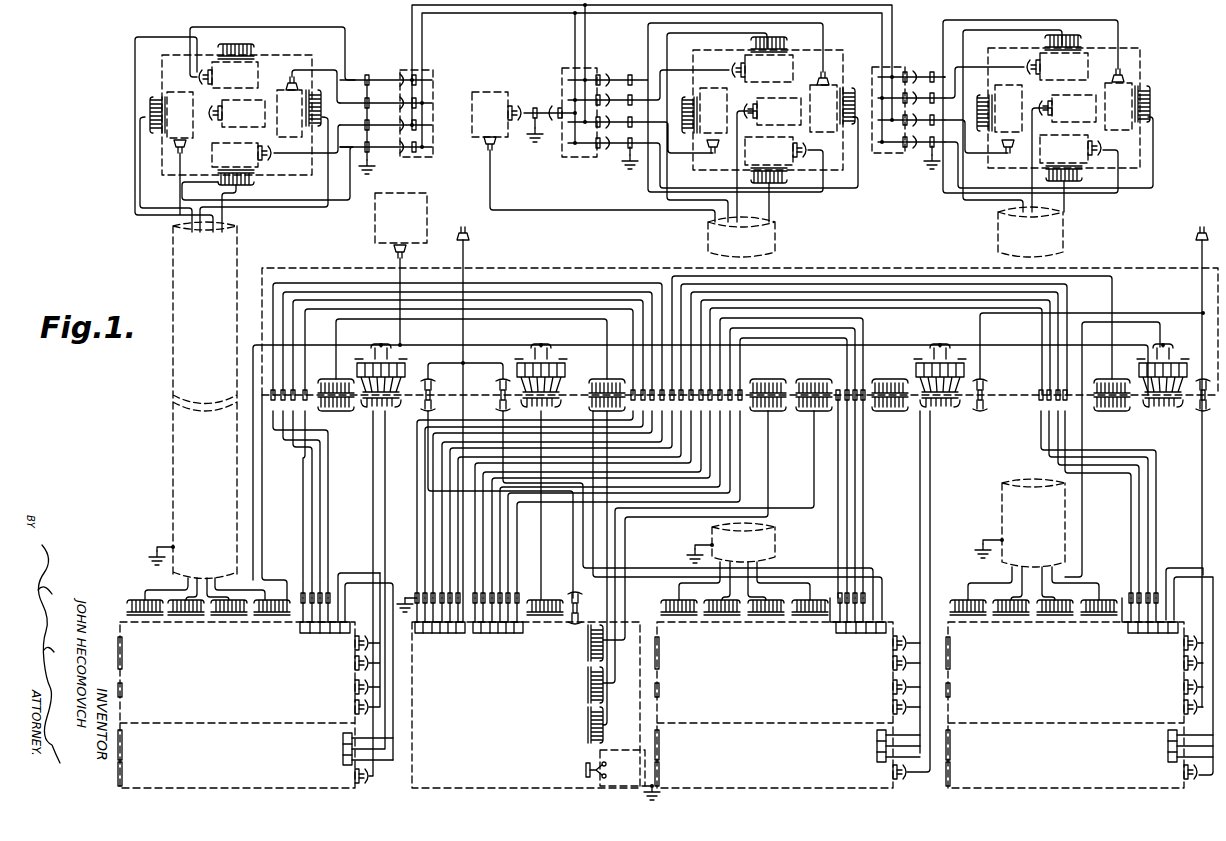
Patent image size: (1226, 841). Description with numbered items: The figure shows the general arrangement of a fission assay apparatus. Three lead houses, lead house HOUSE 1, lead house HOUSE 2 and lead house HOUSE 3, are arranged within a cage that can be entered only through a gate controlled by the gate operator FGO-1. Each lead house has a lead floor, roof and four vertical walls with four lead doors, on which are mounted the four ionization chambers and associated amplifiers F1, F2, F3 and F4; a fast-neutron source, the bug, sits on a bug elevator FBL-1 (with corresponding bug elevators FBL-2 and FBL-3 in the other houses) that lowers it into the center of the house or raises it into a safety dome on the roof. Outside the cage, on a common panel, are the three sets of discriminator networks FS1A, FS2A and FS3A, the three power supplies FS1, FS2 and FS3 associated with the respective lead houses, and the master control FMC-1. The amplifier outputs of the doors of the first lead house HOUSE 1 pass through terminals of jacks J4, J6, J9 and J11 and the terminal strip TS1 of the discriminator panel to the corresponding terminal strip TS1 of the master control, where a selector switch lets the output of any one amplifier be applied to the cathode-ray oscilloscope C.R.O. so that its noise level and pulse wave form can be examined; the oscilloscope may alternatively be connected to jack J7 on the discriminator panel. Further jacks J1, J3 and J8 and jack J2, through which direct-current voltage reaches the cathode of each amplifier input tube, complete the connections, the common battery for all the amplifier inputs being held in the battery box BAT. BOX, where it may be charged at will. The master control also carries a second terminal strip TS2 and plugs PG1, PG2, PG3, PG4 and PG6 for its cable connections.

The lead house HOUSE 1 is at (236, 393).
The lead house HOUSE 2 is at (745, 140).
The lead house HOUSE 3 is at (1048, 138).
The ionization chamber and associated amplifier F1 is at (235, 155).
The ionization chamber and associated amplifier F2 is at (299, 107).
The ionization chamber and associated amplifier F3 is at (228, 66).
The ionization chamber and associated amplifier F4 is at (171, 122).
The bug elevator FBL-1 is at (237, 113).
The bug elevator FBL-2 is at (772, 111).
The bug elevator FBL-3 is at (1067, 108).
The jack J1 is at (256, 178).
The jack J2 is at (272, 153).
The jack J3 is at (355, 643).
The jack J4 is at (186, 618).
The jack J6 is at (229, 618).
The jack J7 is at (130, 689).
The jack J8 is at (245, 598).
The jack J9 is at (272, 618).
The jack J11 is at (145, 618).
The battery box BAT. BOX is at (593, 157).
The gate operator FGO-1 is at (401, 269).
The set of discriminator networks FS1A is at (255, 599).
The power supply FS1 is at (245, 598).
The set of discriminator networks FS2A is at (787, 655).
The power supply FS2 is at (831, 754).
The set of discriminator networks FS3A is at (1074, 633).
The power supply FS3 is at (1125, 754).
The master control FMC-1 is at (528, 696).
The terminal strip TS1 is at (345, 588).
The terminal strip TS2 is at (460, 621).
The plug PG1 is at (578, 725).
The plug PG2 is at (578, 685).
The plug PG3 is at (545, 615).
The plug PG4 is at (578, 643).
The plug PG6 is at (572, 629).
The cathode-ray oscilloscope C.R.O. is at (623, 775).